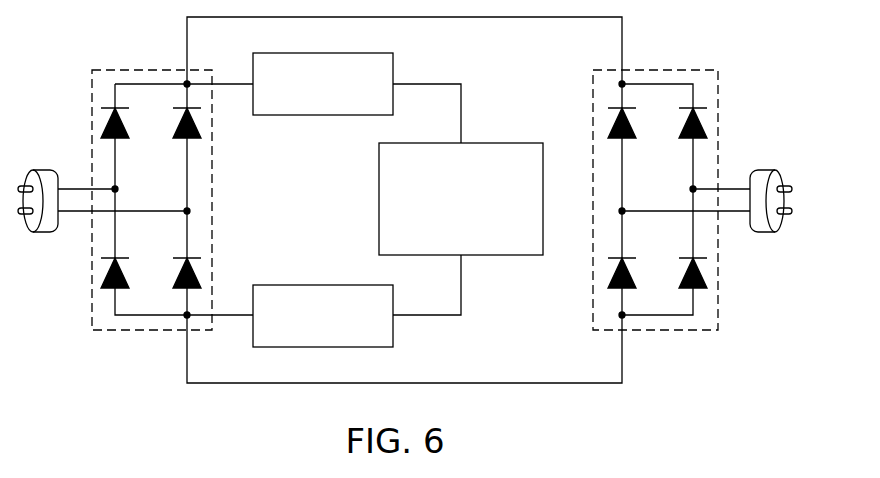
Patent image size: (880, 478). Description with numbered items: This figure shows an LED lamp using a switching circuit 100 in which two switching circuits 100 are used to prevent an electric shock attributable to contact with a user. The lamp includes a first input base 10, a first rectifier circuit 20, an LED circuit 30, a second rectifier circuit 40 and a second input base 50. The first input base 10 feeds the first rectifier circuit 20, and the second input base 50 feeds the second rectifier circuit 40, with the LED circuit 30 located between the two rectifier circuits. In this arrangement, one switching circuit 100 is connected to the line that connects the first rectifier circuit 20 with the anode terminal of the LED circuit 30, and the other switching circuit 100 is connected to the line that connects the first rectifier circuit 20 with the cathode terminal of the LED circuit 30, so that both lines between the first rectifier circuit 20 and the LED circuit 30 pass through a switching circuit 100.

The first input base 10 is at (38, 170).
The first rectifier circuit 20 is at (130, 70).
The LED circuit 30 is at (514, 143).
The second rectifier circuit 40 is at (673, 70).
The second input base 50 is at (763, 170).
The switching circuit 100 is at (310, 115).